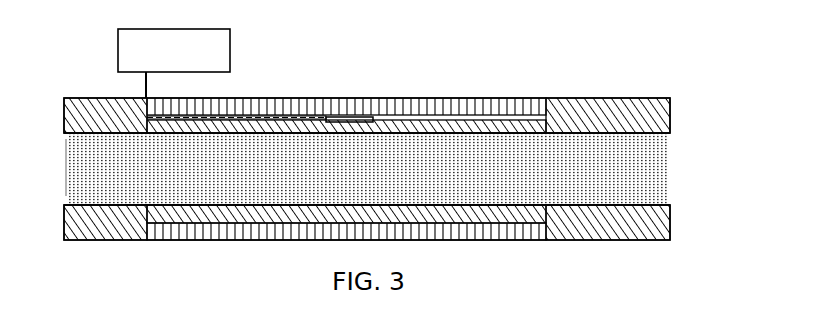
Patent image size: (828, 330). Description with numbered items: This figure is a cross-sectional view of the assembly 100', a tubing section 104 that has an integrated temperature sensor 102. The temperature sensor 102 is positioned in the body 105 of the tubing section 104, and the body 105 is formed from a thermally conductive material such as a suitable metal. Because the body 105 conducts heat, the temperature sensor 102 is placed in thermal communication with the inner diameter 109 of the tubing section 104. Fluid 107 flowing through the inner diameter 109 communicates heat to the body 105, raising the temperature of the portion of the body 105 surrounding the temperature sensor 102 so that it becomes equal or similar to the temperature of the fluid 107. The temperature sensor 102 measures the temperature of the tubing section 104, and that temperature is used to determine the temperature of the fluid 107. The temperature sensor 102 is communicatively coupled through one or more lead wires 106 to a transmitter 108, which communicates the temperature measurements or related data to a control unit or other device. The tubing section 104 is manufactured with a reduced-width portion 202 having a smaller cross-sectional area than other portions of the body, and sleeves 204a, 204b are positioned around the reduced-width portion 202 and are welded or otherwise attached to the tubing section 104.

The assembly 100' is at (372, 153).
The temperature sensor 102 is at (341, 128).
The tubing section 104 is at (66, 142).
The body 105 is at (581, 109).
The lead wires 106 is at (259, 109).
The fluid 107 is at (654, 184).
The transmitter 108 is at (186, 67).
The inner diameter 109 is at (663, 166).
The reduced-width portion 202 is at (250, 137).
The sleeve 204a is at (342, 104).
The sleeve 204b is at (438, 235).